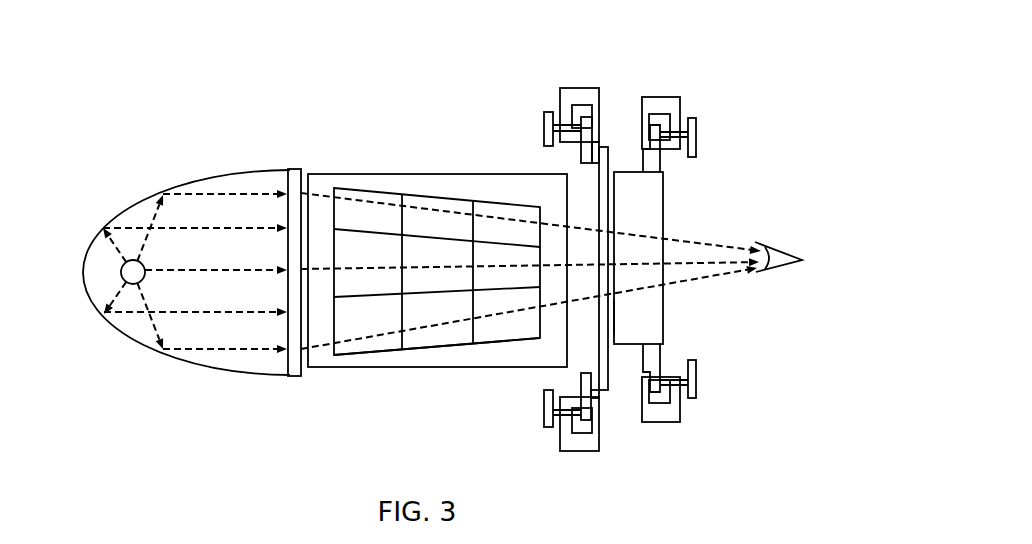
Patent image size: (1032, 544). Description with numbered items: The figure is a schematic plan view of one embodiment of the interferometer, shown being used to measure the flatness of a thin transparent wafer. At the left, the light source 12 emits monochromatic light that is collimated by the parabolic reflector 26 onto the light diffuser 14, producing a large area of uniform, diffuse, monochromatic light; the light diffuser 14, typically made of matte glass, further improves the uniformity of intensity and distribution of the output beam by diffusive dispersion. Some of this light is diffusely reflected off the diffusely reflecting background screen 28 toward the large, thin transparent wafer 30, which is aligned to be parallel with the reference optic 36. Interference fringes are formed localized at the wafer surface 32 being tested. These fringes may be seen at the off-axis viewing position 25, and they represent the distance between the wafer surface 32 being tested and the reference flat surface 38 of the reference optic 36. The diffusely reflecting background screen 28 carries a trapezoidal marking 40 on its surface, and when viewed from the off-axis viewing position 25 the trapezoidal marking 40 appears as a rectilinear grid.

The light source 12 is at (132, 284).
The light diffuser 14 is at (297, 170).
The off-axis viewing position 25 is at (782, 248).
The parabolic reflector 26 is at (192, 178).
The diffusely reflecting background screen 28 is at (335, 368).
The thin transparent wafer 30 is at (602, 187).
The wafer surface 32 is at (605, 212).
The reference optic 36 is at (662, 201).
The reference flat surface 38 is at (615, 317).
The trapezoidal marking 40 is at (498, 346).